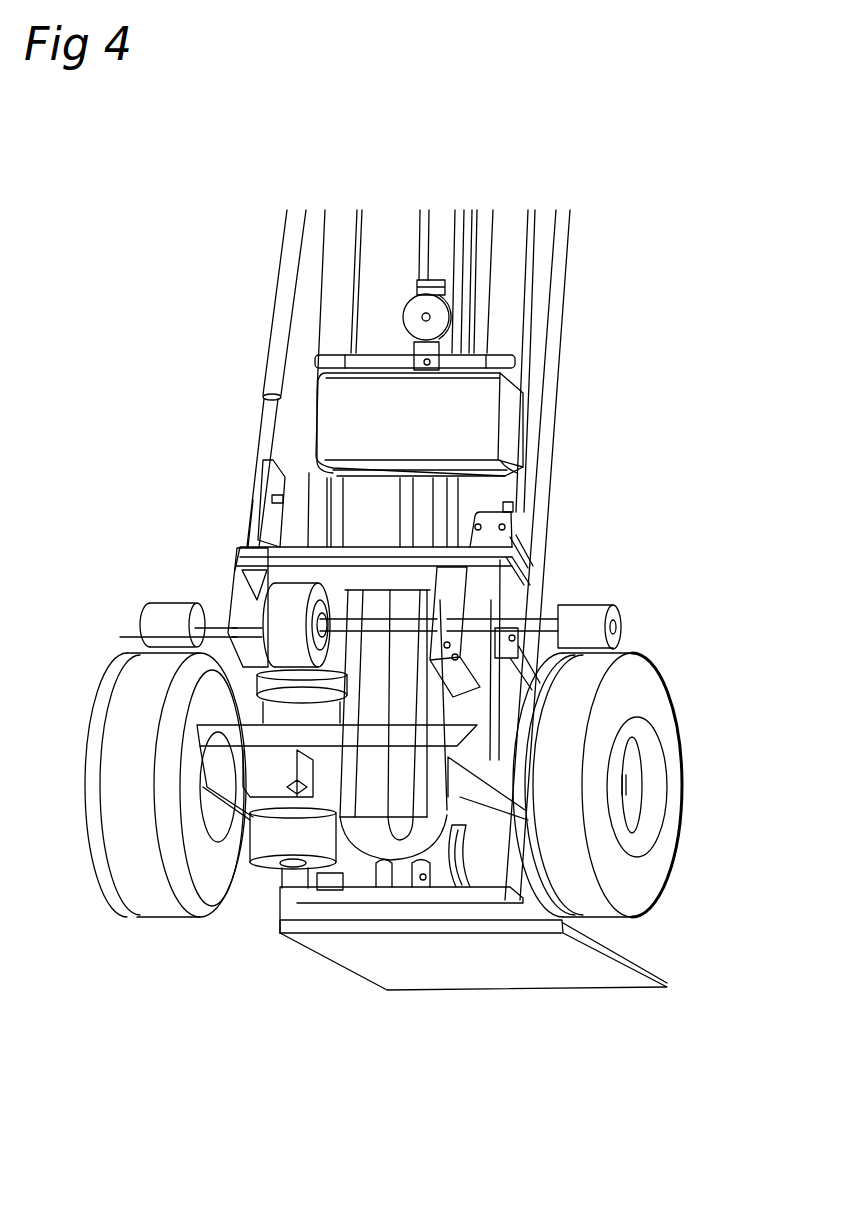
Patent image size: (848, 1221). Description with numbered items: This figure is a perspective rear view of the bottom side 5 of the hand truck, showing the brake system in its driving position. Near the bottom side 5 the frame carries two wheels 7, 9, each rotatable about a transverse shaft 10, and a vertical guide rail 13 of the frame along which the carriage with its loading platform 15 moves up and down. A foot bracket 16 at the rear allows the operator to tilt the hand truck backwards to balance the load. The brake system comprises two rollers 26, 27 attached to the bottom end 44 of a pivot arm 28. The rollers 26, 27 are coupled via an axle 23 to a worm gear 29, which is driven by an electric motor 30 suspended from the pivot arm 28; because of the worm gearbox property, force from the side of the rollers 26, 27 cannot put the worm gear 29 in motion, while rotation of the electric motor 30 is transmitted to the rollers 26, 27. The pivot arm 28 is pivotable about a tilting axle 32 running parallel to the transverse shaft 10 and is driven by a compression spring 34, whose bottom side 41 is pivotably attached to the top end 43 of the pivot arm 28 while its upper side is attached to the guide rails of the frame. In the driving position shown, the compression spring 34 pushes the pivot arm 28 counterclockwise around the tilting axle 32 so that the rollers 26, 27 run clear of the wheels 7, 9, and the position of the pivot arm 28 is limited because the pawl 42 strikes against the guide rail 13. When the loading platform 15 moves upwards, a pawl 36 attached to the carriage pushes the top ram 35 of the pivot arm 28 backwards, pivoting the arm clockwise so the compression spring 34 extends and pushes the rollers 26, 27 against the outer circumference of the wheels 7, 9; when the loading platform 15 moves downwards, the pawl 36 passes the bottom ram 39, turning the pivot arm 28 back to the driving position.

The bottom side 5 is at (688, 664).
The wheel 7 is at (655, 865).
The wheel 9 is at (133, 873).
The transverse shaft 10 is at (627, 783).
The guide rail 13 is at (555, 323).
The loading platform 15 is at (607, 973).
The foot bracket 16 is at (232, 735).
The axle 23 is at (373, 627).
The roller 26 is at (587, 612).
The roller 27 is at (162, 615).
The pivot arm 28 is at (268, 515).
The worm gear 29 is at (288, 603).
The electric motor 30 is at (293, 817).
The tilting axle 32 is at (121, 637).
The compression spring 34 is at (278, 345).
The top ram 35 is at (480, 524).
The pawl 36 is at (512, 505).
The bottom ram 39 is at (470, 690).
The bottom side 41 is at (255, 485).
The pawl 42 is at (512, 543).
The top end 43 is at (277, 474).
The bottom end 44 is at (232, 603).